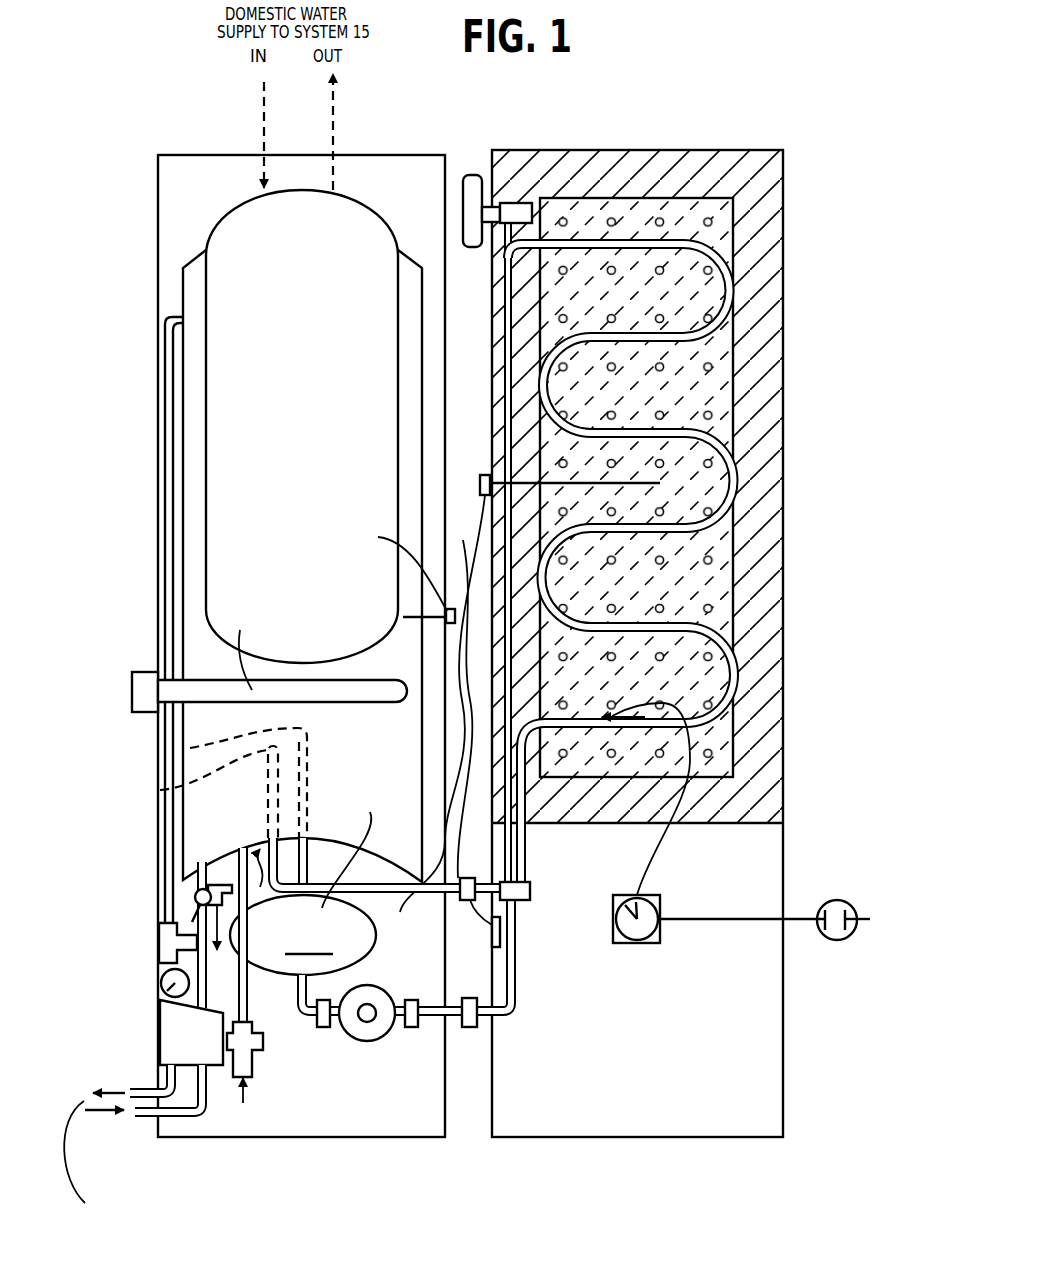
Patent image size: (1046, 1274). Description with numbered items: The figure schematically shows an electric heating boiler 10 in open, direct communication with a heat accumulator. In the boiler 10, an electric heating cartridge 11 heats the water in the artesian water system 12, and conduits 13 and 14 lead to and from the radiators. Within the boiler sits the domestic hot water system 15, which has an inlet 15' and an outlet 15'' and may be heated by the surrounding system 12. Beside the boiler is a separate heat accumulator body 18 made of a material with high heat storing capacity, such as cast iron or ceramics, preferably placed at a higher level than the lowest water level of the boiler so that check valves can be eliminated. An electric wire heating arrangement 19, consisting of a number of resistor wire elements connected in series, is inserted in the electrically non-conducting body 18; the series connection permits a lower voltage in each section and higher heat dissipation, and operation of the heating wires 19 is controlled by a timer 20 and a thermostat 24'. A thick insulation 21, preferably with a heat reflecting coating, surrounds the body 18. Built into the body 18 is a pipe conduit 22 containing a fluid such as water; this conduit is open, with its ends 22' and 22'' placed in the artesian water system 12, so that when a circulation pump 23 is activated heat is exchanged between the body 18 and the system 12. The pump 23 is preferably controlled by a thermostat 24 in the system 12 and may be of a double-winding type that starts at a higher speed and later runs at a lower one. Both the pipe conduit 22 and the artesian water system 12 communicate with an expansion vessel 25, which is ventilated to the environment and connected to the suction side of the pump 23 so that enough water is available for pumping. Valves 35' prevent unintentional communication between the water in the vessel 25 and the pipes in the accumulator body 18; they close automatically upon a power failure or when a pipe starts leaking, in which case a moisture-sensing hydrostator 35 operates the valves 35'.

The heating boiler 10 is at (157, 234).
The electric heating cartridge 11 is at (218, 690).
The artesian water system 12 is at (182, 830).
The conduit to the radiators 13 is at (148, 1068).
The conduit from the radiators 14 is at (145, 1115).
The domestic hot water system 15 is at (248, 426).
The inlet 15' is at (233, 131).
The outlet 15'' is at (365, 132).
The heat accumulator body 18 is at (707, 383).
The electric wire heating arrangement 19 is at (714, 553).
The timer 20 is at (645, 940).
The insulation 21 is at (765, 645).
The pipe conduit 22 is at (680, 528).
The end of pipe conduit 22' is at (301, 817).
The end of pipe conduit 22'' is at (201, 805).
The circulation pump 23 is at (365, 1043).
The thermostat 24 is at (384, 692).
The thermostat 24' is at (474, 685).
The expansion vessel 25 is at (309, 875).
The hydrostator 35 is at (546, 959).
The valves 35' is at (466, 952).